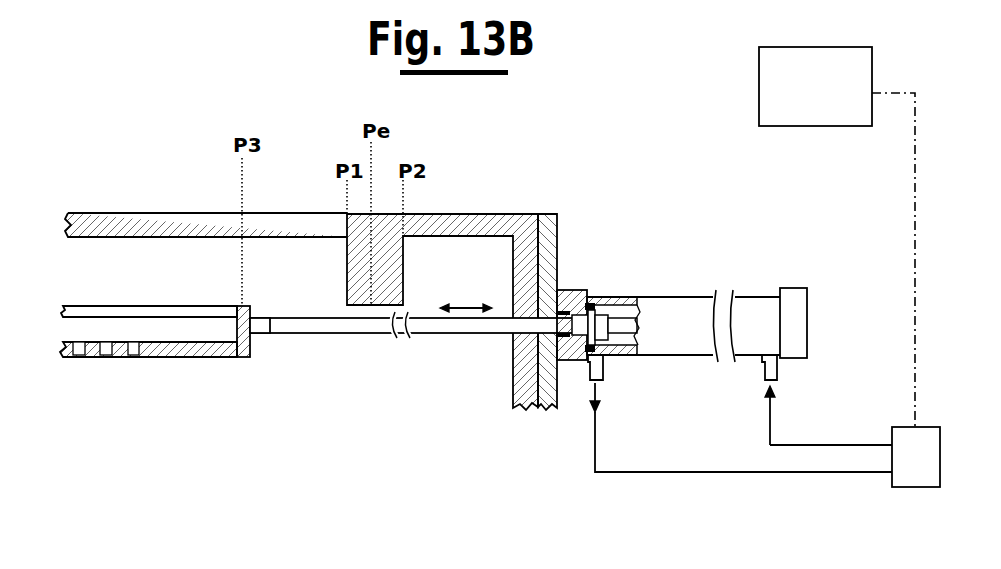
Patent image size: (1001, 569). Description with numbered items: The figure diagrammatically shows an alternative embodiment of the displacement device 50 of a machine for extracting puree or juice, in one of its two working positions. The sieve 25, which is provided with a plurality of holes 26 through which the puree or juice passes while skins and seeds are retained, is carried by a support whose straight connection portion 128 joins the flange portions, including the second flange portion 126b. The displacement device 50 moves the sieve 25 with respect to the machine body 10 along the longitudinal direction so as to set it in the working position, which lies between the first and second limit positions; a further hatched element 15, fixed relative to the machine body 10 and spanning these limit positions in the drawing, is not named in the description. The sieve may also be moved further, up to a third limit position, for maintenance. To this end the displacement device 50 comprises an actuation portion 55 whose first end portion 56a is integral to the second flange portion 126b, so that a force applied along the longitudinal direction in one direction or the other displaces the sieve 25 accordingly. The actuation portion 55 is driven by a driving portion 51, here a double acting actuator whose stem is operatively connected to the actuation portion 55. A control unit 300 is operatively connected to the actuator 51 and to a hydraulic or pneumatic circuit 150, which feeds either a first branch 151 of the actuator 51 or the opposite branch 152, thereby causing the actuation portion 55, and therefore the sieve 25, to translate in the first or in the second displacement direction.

The machine body 10 is at (135, 226).
The block 15 is at (357, 280).
The sieve 25 is at (129, 395).
The holes 26 is at (79, 358).
The straight connection portion 128 is at (113, 313).
The second flange portion 126b is at (247, 350).
The actuation portion 55 is at (435, 323).
The first end portion 56a is at (257, 323).
The driving portion 51 is at (681, 278).
The displacement device 50 is at (800, 270).
The hydraulic or pneumatic circuit 150 is at (846, 482).
The first branch 151 is at (833, 443).
The opposite branch 152 is at (705, 474).
The control unit 300 is at (735, 42).